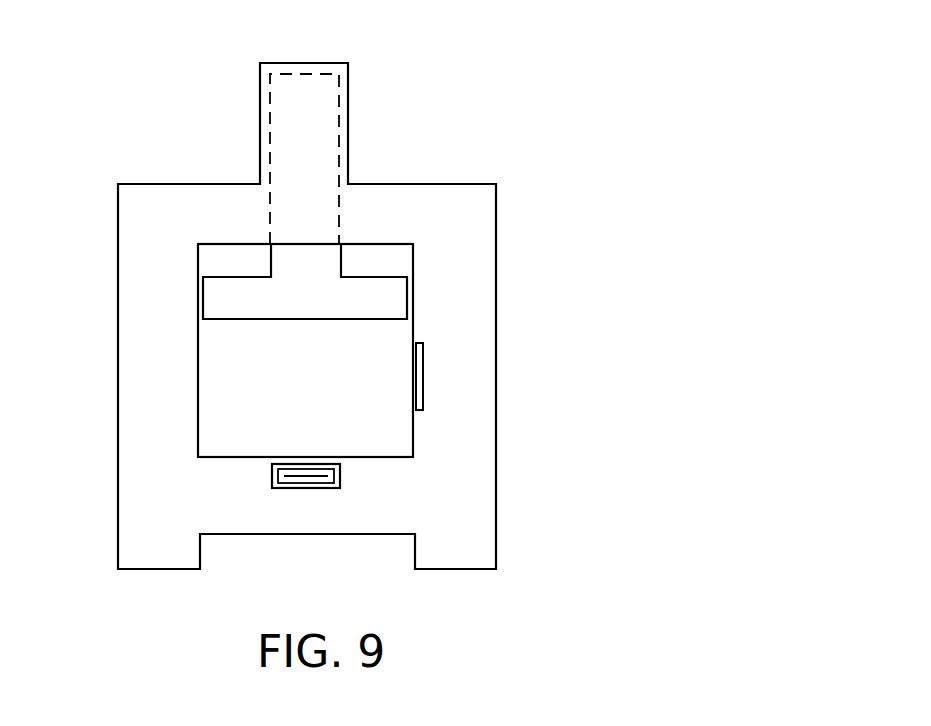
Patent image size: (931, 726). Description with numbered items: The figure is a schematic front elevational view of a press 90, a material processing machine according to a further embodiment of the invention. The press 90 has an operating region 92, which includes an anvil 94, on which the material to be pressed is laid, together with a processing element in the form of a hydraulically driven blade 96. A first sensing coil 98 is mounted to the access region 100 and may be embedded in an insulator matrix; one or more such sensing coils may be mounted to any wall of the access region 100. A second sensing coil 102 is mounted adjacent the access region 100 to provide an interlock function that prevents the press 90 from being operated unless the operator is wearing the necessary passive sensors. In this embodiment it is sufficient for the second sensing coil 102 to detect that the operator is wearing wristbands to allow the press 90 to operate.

The press 90 is at (349, 292).
The operating region 92 is at (263, 373).
The anvil 94 is at (382, 449).
The hydraulically driven blade 96 is at (388, 298).
The first sensing coil 98 is at (423, 373).
The access region 100 is at (468, 416).
The second sensing coil 102 is at (270, 477).